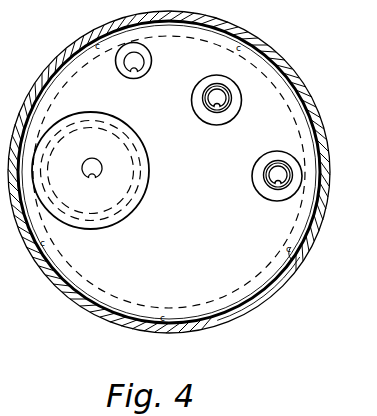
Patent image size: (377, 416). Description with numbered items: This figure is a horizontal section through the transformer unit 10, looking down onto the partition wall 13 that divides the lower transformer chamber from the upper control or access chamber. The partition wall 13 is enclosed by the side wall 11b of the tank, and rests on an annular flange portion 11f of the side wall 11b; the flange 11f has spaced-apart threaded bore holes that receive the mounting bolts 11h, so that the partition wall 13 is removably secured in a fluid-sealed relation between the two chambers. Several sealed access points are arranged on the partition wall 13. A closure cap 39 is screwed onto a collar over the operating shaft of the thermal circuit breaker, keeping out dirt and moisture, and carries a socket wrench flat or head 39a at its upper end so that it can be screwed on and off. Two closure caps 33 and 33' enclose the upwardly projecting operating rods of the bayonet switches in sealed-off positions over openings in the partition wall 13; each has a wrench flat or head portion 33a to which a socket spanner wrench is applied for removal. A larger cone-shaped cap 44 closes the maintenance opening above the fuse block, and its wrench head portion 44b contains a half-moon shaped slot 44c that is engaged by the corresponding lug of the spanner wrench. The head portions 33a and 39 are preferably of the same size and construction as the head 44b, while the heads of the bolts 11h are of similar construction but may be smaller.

The transformer unit 10 is at (355, 110).
The side wall 11b is at (326, 209).
The mounting bolts 11h is at (294, 262).
The annular flange portion 11f is at (270, 297).
The partition wall 13 is at (180, 270).
The closure cap 33 is at (257, 176).
The closure cap 33' is at (236, 100).
The wrench flat or head portion 33a is at (224, 105).
The closure cap 39 is at (150, 53).
The socket wrench flat or head 39a is at (116, 61).
The cone-shaped cap 44 is at (82, 111).
The wrench head portion 44b is at (107, 157).
The half-moon shaped slot 44c is at (92, 178).